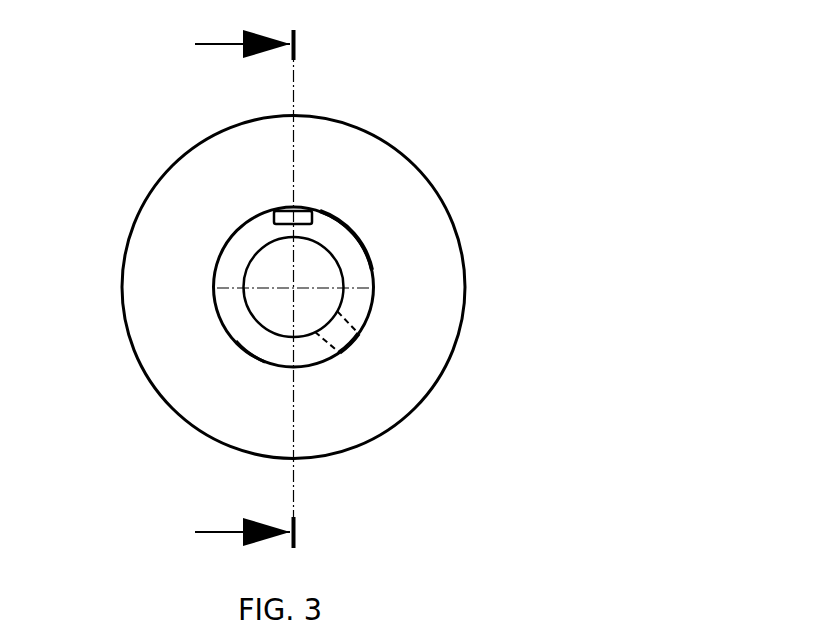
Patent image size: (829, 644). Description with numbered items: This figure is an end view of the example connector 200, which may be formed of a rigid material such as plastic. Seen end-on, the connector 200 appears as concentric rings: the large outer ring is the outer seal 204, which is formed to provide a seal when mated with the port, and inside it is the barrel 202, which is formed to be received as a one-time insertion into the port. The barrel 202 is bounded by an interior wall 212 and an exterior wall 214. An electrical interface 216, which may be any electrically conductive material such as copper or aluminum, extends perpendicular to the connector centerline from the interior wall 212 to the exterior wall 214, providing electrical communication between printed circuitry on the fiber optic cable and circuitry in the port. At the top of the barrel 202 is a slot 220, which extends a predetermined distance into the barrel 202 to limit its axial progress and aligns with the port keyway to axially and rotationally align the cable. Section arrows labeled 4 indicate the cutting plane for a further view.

The connector 200 is at (424, 80).
The barrel 202 is at (212, 247).
The outer seal 204 is at (398, 197).
The interior wall 212 is at (273, 305).
The exterior wall 214 is at (228, 339).
The electrical interface 216 is at (340, 337).
The slot 220 is at (297, 215).
The section line 4- 4 is at (243, 289).